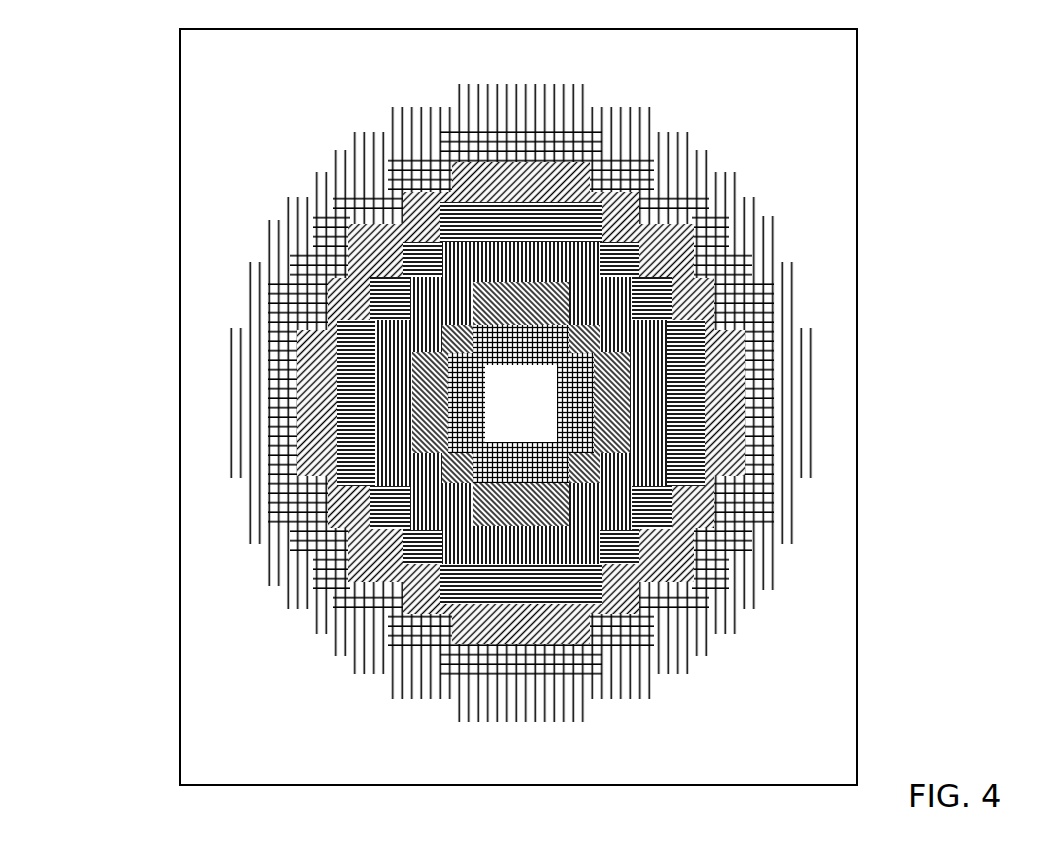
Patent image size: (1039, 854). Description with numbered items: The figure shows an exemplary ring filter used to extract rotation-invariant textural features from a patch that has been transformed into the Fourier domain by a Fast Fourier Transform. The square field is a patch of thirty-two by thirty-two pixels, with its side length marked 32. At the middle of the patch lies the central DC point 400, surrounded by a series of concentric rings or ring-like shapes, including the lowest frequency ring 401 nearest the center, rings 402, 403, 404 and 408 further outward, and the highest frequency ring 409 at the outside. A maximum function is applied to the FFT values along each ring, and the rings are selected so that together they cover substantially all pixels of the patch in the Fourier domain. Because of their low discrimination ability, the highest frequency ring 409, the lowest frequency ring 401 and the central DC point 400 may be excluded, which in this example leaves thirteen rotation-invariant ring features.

The layout region boundary 32 is at (538, 392).
The central DC point 400 is at (503, 396).
The lowest frequency ring 401 is at (503, 463).
The ring 402 is at (487, 302).
The ring 403 is at (490, 547).
The ring 404 is at (458, 217).
The ring 408 is at (407, 683).
The highest frequency ring 409 is at (216, 76).